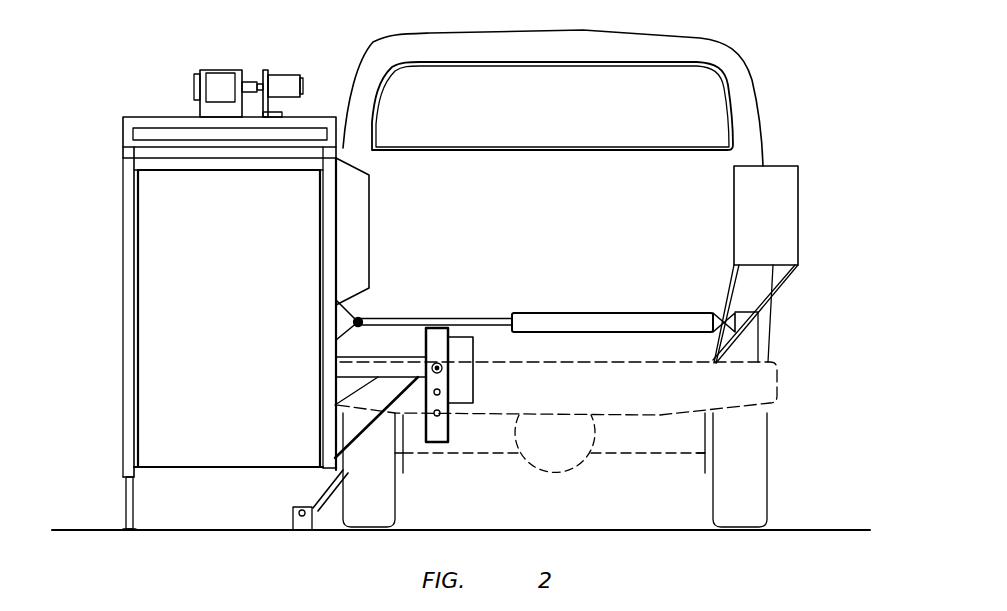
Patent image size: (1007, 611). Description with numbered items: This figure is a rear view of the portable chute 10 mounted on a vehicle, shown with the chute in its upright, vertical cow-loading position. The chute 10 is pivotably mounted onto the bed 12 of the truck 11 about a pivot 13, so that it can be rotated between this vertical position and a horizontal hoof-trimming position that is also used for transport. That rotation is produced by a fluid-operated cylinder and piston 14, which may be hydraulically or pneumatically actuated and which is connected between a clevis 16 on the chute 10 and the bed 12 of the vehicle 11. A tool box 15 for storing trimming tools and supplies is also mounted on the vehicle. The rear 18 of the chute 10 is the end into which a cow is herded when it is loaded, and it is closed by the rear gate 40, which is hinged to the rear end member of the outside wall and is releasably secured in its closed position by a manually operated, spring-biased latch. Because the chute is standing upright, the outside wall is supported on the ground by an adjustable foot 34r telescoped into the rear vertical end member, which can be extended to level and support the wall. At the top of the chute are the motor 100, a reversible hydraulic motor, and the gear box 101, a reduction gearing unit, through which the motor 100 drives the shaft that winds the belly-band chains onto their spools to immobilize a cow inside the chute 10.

The portable chute 10 is at (104, 303).
The truck 11 is at (760, 51).
The bed 12 is at (778, 380).
The pivot 13 is at (442, 370).
The fluid-operated cylinder and piston 14 is at (637, 313).
The tool box 15 is at (792, 217).
The clevis 16 is at (355, 315).
The rear 18 is at (212, 479).
The foot 34r is at (126, 500).
The rear gate 40 is at (246, 319).
The motor 100 is at (285, 75).
The gear box 101 is at (218, 72).